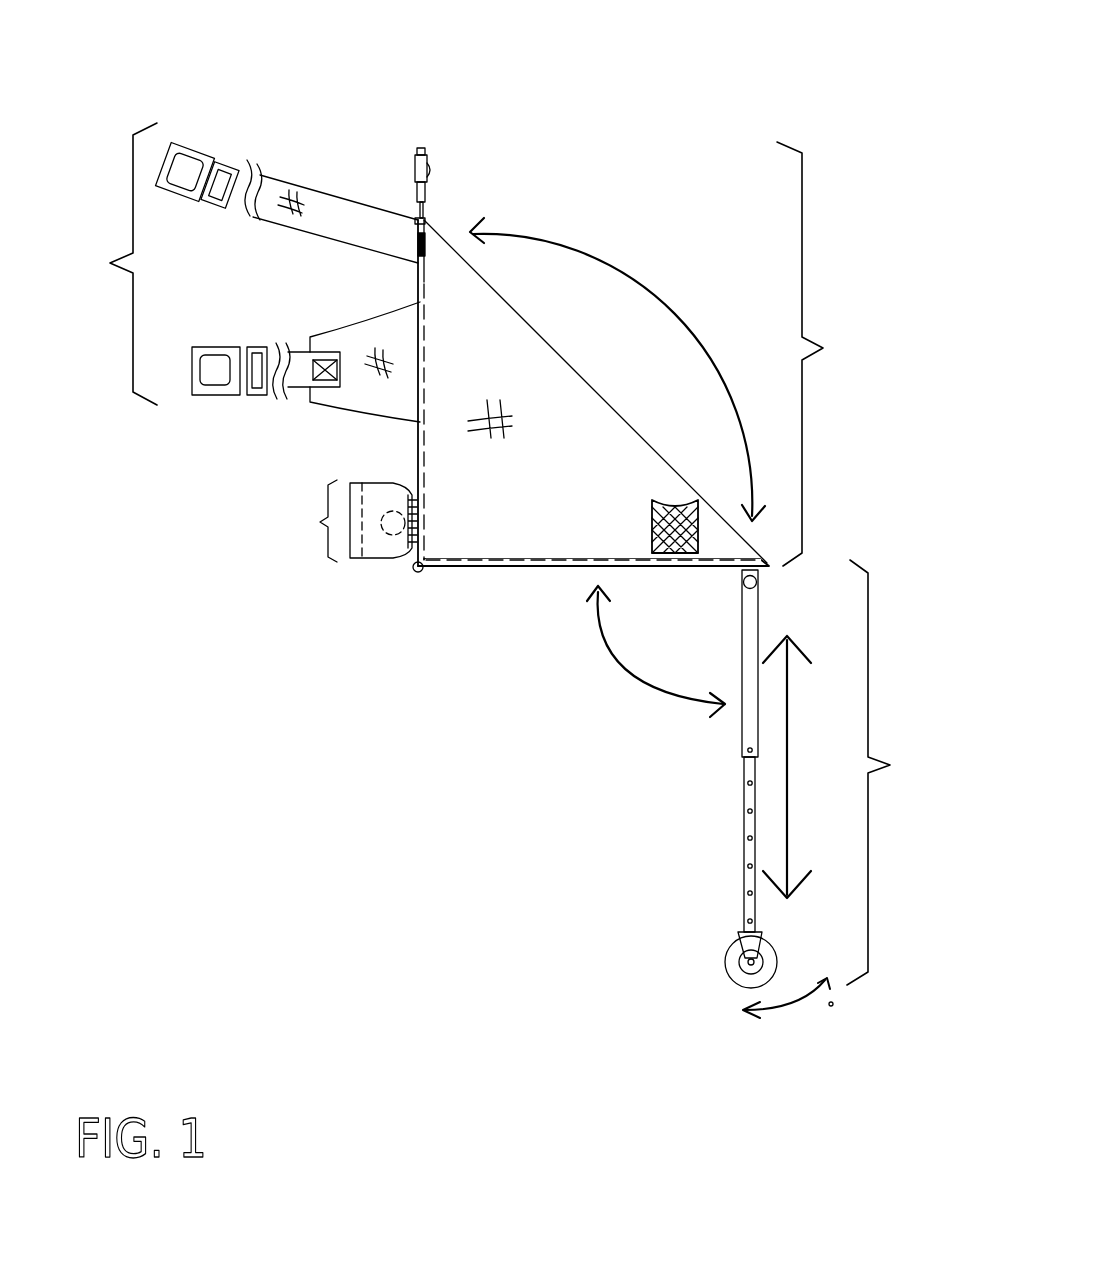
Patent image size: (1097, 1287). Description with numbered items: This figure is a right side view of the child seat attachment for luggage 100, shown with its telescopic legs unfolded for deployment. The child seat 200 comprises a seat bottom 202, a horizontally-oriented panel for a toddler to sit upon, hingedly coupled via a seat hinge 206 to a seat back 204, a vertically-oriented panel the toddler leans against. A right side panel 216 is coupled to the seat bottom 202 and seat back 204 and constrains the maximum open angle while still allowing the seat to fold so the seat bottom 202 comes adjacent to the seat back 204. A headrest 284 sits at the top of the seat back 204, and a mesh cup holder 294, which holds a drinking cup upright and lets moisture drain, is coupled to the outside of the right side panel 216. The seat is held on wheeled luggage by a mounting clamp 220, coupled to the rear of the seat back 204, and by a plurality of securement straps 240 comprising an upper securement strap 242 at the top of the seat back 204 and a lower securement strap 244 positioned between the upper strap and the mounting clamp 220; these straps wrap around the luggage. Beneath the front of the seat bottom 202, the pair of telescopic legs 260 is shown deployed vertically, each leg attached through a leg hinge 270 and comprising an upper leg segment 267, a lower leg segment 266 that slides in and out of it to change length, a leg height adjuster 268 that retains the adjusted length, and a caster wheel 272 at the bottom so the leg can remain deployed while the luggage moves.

The child seat attachment for luggage 100 is at (670, 104).
The child seat 200 is at (836, 354).
The seat bottom 202 is at (460, 568).
The seat back 204 is at (417, 452).
The seat hinge 206 is at (412, 567).
The right side panel 216 is at (522, 368).
The mounting clamp 220 is at (335, 521).
The plurality of securement straps 240 is at (100, 264).
The upper securement strap 242 is at (313, 187).
The lower securement strap 244 is at (275, 343).
The pair of telescopic legs 260 is at (861, 772).
The lower leg segment 266 is at (743, 823).
The upper leg segment 267 is at (750, 603).
The leg height adjuster 268 is at (742, 748).
The leg hinge 270 is at (744, 585).
The caster wheel 272 is at (747, 943).
The headrest 284 is at (430, 172).
The mesh cup holder 294 is at (677, 505).